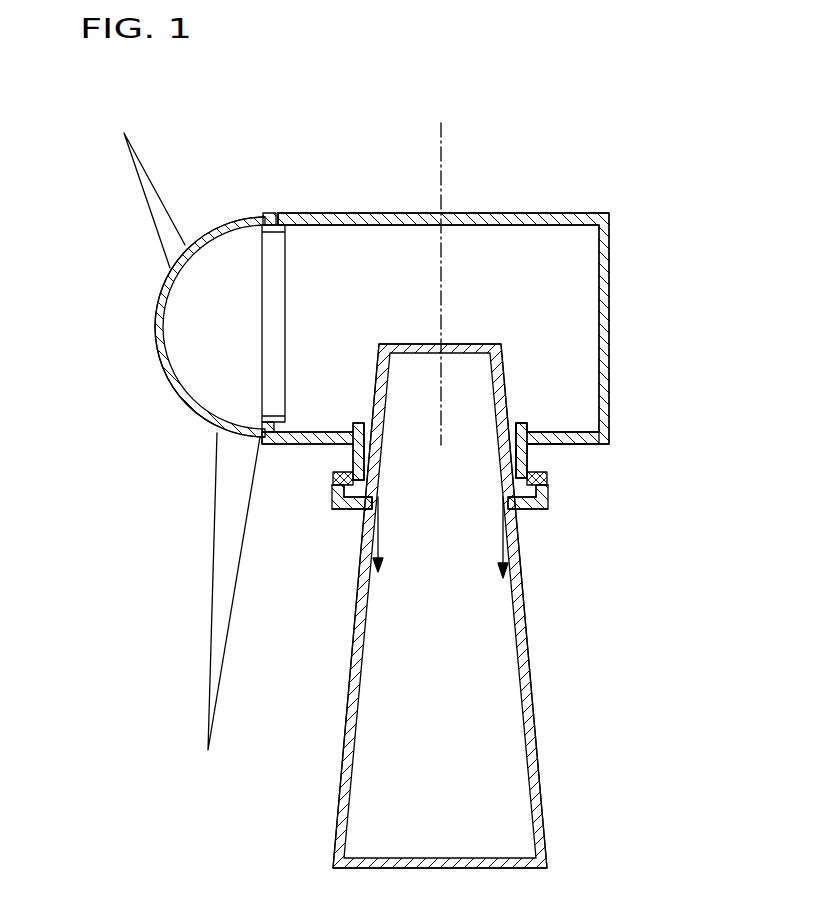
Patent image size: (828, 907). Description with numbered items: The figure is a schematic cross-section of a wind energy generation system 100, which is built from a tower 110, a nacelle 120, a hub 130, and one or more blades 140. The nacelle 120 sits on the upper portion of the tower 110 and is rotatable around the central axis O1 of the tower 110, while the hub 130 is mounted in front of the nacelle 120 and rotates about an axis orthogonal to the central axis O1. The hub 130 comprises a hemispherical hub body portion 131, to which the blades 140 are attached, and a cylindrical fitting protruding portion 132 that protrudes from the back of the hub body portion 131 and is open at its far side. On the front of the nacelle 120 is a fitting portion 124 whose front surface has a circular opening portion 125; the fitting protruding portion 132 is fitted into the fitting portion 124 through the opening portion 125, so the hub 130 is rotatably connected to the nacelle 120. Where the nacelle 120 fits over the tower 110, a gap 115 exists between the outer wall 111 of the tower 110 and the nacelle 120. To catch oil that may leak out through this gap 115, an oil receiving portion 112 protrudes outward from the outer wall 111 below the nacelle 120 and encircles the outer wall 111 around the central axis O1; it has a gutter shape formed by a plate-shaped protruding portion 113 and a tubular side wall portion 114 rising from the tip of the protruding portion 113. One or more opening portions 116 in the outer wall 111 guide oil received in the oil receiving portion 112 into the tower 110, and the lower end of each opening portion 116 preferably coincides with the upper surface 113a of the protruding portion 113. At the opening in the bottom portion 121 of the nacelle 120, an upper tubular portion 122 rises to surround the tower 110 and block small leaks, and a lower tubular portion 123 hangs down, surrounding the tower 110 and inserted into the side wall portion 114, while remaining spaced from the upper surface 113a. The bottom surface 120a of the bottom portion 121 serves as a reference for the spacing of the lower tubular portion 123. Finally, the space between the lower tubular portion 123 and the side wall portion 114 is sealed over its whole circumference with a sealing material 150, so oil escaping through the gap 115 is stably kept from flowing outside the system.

The wind energy generation system 100 is at (578, 174).
The central axis O1 is at (441, 168).
The tower 110 is at (535, 714).
The outer wall 111 is at (524, 612).
The oil receiving portion 112 is at (632, 485).
The protruding portion 113 is at (535, 508).
The upper surface 113a is at (352, 508).
The side wall portion 114 is at (548, 500).
The gap 115 is at (366, 446).
The opening portion 116 is at (375, 494).
The nacelle 120 is at (478, 213).
The bottom surface 120a is at (338, 443).
The bottom portion 121 is at (576, 440).
The upper tubular portion 122 is at (540, 433).
The lower tubular portion 123 is at (528, 476).
The fitting portion 124 is at (292, 213).
The opening portion 125 is at (268, 213).
The hub 130 is at (232, 217).
The hub body portion 131 is at (163, 335).
The fitting protruding portion 132 is at (290, 262).
The blade 140 is at (132, 166).
The sealing material 150 is at (549, 482).